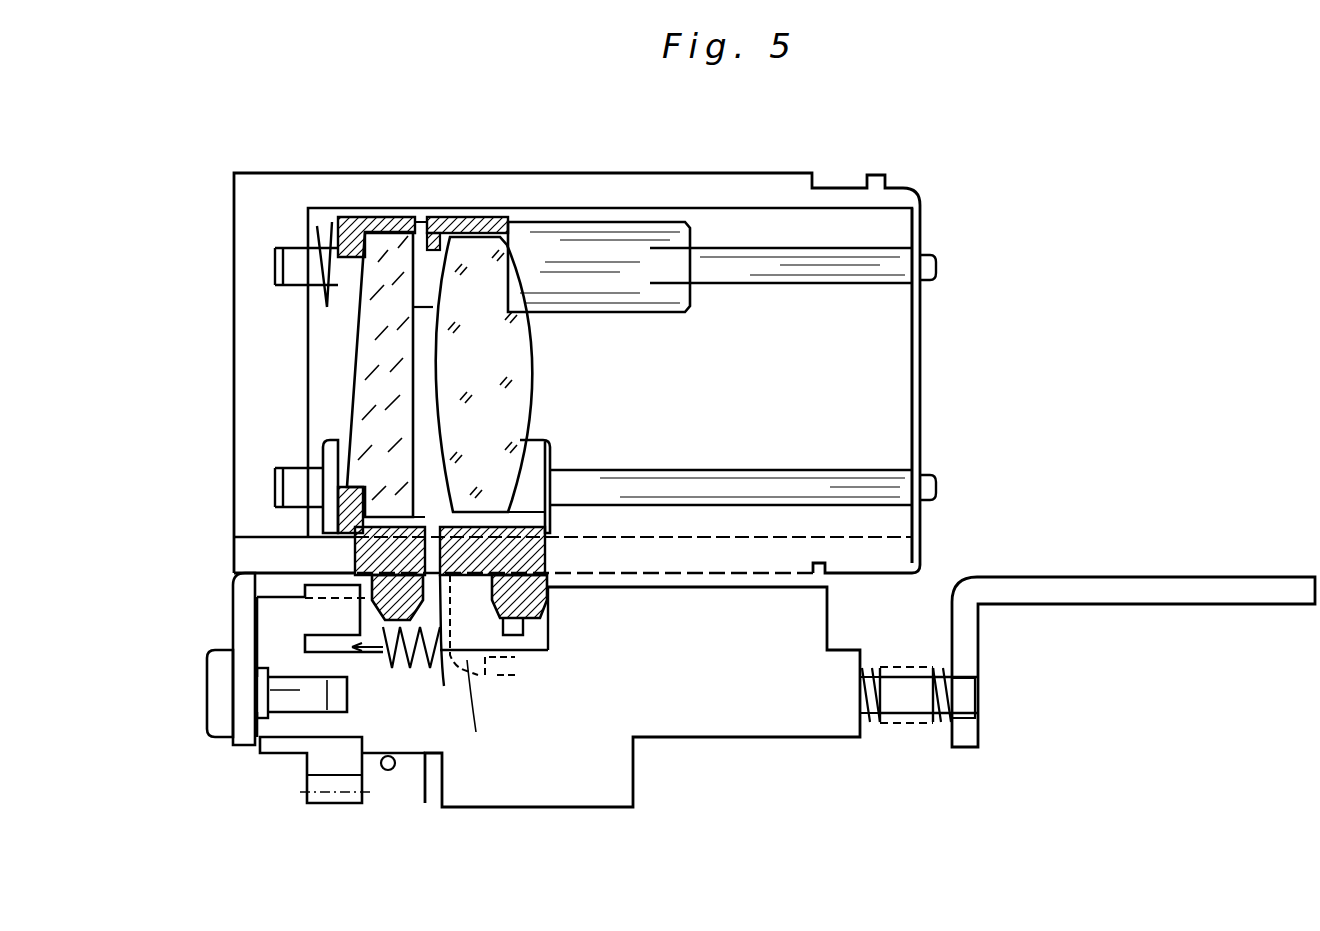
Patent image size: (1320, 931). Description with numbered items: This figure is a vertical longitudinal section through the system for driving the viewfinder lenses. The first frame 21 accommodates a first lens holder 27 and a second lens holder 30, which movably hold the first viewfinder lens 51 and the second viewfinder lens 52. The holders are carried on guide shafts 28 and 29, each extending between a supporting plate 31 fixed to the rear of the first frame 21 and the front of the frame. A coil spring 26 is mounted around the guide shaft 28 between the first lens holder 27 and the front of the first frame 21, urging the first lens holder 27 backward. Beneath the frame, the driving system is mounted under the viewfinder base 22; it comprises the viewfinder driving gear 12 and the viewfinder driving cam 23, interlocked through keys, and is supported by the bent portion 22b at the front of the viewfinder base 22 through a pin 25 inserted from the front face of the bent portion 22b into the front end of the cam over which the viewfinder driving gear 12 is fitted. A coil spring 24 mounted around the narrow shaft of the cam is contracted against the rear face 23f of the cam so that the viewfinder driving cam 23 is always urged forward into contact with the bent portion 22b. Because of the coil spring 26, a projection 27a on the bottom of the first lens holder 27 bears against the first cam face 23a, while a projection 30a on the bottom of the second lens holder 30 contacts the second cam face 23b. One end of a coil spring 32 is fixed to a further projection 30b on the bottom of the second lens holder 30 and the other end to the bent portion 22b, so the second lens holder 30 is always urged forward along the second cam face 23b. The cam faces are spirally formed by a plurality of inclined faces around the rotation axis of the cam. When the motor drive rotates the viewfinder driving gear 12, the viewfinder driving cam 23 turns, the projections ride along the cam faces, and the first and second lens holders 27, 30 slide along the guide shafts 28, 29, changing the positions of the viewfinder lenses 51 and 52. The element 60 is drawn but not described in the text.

The viewfinder driving gear 12 is at (322, 760).
The first frame 21 is at (598, 204).
The viewfinder base 22 is at (1055, 587).
The bent portion 22b is at (239, 748).
The viewfinder driving cam 23 is at (542, 796).
The first cam face 23a is at (447, 650).
The second cam face 23b is at (489, 707).
The rear face 23f is at (866, 728).
The coil spring 24 is at (900, 728).
The pin 25 is at (217, 666).
The coil spring 26 is at (324, 230).
The first lens holder 27 is at (583, 258).
The projection 27a is at (305, 590).
The guide shaft 28 is at (780, 284).
The guide shaft 29 is at (797, 482).
The second lens holder 30 is at (550, 442).
The projection 30a is at (548, 612).
The projection 30b is at (480, 668).
The supporting plate 31 is at (913, 224).
The coil spring 32 is at (406, 676).
The first viewfinder lens 51 is at (402, 297).
The second viewfinder lens 52 is at (492, 306).
The pin 60 is at (390, 771).